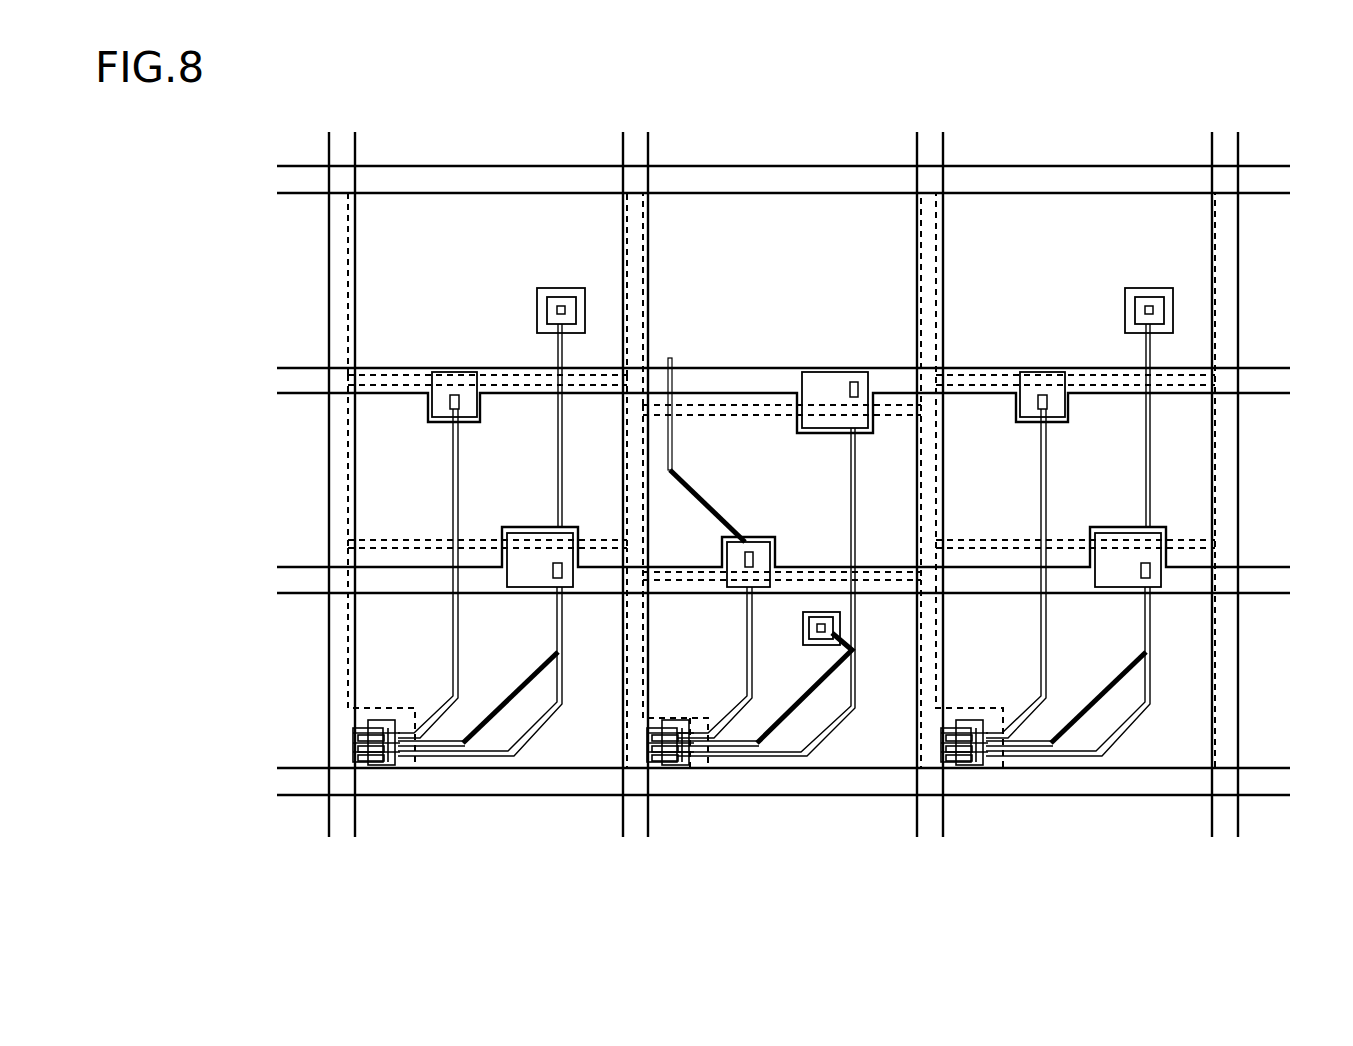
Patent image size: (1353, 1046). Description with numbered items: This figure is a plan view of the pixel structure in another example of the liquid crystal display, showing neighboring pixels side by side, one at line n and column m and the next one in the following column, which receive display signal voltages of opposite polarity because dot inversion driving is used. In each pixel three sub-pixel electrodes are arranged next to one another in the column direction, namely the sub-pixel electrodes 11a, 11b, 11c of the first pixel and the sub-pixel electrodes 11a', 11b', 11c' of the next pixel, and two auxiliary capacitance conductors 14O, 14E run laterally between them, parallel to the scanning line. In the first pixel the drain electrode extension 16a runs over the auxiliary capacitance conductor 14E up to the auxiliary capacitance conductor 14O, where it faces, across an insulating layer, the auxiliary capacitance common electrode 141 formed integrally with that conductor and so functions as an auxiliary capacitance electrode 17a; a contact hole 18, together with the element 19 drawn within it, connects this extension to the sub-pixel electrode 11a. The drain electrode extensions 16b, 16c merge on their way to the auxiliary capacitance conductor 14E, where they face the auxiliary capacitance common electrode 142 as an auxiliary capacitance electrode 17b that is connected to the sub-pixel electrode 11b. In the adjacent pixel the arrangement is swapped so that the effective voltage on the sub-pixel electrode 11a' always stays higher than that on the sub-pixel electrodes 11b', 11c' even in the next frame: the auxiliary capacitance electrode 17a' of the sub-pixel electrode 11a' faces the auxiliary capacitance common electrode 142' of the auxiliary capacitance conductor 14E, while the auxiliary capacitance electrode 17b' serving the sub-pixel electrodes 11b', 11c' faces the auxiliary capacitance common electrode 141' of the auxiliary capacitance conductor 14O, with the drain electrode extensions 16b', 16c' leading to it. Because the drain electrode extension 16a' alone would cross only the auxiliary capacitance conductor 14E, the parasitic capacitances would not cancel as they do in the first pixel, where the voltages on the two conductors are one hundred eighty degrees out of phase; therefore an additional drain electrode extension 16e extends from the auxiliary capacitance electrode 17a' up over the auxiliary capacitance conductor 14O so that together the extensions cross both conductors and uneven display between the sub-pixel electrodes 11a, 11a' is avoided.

The auxiliary capacitance conductor 14O is at (748, 399).
The auxiliary capacitance conductor 14E is at (748, 561).
The sub-pixel electrode 11a is at (439, 461).
The sub-pixel electrode 11b is at (439, 658).
The sub-pixel electrode 11c is at (438, 284).
The sub-pixel electrode 11a' is at (782, 438).
The sub-pixel electrode 11b' is at (782, 710).
The sub-pixel electrode 11c' is at (782, 255).
The contact hole 18 is at (548, 298).
The contact hole 19 is at (567, 290).
The auxiliary capacitance common electrode 141 is at (716, 420).
The auxiliary capacitance common electrode 142 is at (828, 533).
The auxiliary capacitance common electrode 141' is at (827, 514).
The auxiliary capacitance common electrode 142' is at (753, 536).
The auxiliary capacitance electrode 17a is at (808, 425).
The auxiliary capacitance electrode 17b is at (822, 618).
The auxiliary capacitance electrode 17a' is at (796, 549).
The auxiliary capacitance electrode 17b' is at (830, 362).
The drain electrode extension 16a is at (708, 573).
The drain electrode extension 16b is at (772, 695).
The drain electrode extension 16c is at (796, 680).
The drain electrode extension 16a' is at (707, 662).
The drain wiring 16b' is at (764, 689).
The drain wiring 16c' is at (790, 680).
The drain electrode extension 16e is at (695, 487).